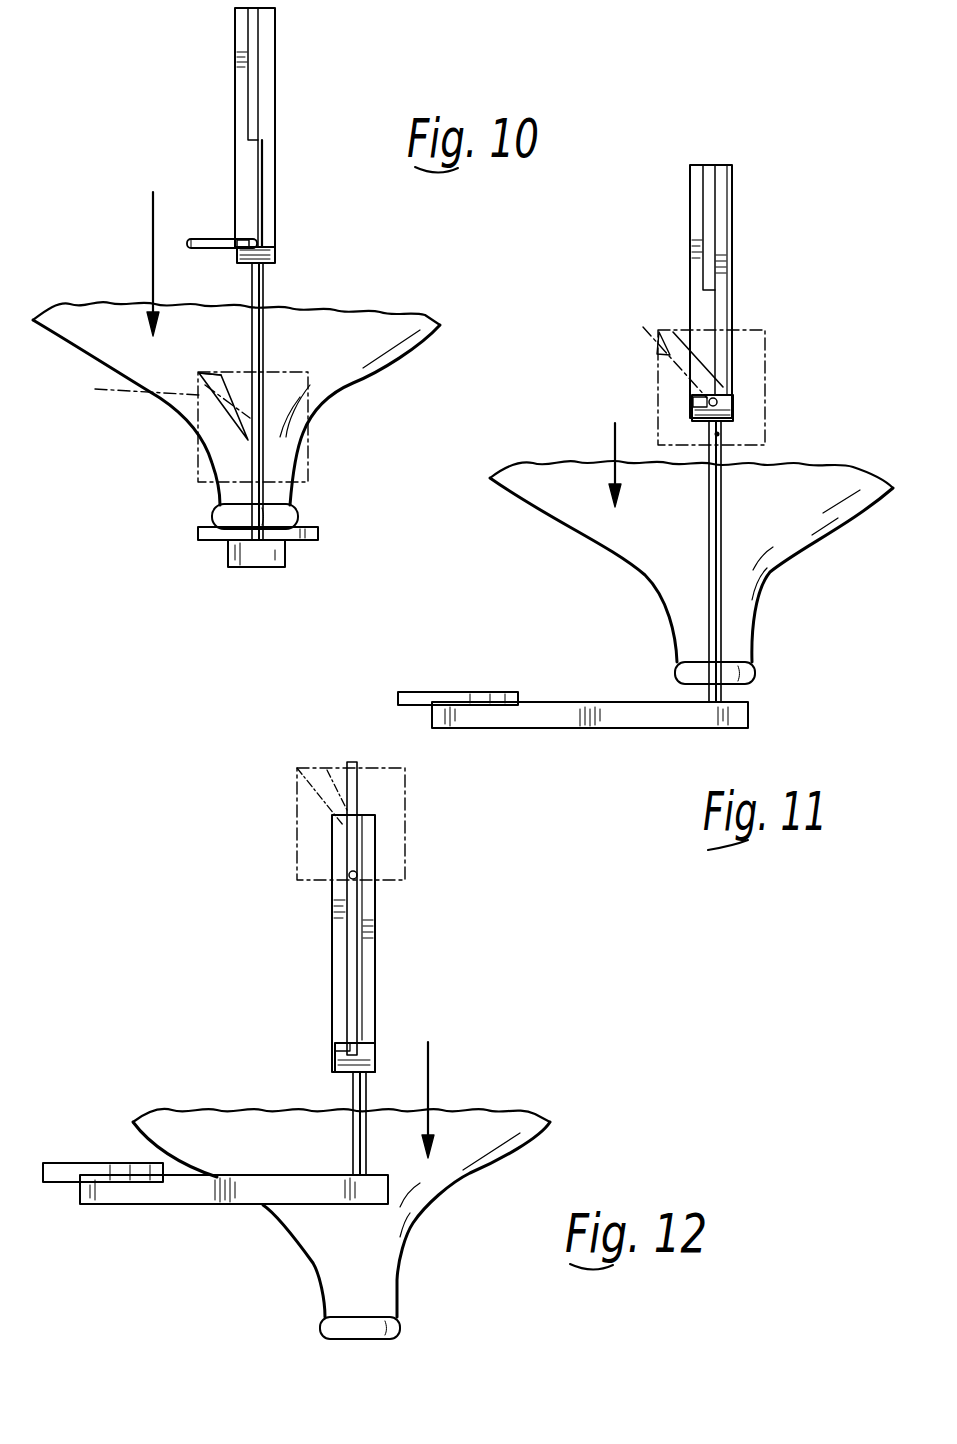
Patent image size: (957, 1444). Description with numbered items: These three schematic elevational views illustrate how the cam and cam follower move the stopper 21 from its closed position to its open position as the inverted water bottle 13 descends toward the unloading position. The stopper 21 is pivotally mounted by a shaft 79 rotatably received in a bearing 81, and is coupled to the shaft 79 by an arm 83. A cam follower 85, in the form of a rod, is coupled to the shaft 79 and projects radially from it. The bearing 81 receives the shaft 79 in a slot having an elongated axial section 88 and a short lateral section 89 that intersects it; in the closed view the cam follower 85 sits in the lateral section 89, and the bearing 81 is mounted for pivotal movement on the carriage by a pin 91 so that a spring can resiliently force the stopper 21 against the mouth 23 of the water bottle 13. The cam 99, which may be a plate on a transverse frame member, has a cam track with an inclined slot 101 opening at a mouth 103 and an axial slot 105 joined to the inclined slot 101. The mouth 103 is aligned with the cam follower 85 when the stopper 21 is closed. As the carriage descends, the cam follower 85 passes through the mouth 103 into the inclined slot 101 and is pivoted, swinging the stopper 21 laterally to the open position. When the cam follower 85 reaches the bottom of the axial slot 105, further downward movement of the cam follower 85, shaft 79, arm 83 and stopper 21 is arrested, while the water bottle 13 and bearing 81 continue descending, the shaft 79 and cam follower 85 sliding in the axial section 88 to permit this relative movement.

In FIG. 10, the water bottle 13 is at (405, 320).
In FIG. 11, the water bottle 13 is at (847, 528).
In FIG. 12, the water bottle 13 is at (540, 1117).
In FIG. 10, the stopper 21 is at (203, 540).
In FIG. 11, the stopper 21 is at (483, 692).
In FIG. 12, the stopper 21 is at (107, 1163).
In FIG. 10, the mouth 23 is at (202, 528).
In FIG. 11, the mouth 23 is at (750, 684).
In FIG. 12, the mouth 23 is at (384, 1339).
In FIG. 10, the shaft 79 is at (263, 290).
In FIG. 11, the shaft 79 is at (715, 561).
In FIG. 12, the shaft 79 is at (353, 1092).
In FIG. 12, the bearing 81 is at (333, 943).
In FIG. 11, the arm 83 is at (597, 728).
In FIG. 12, the arm 83 is at (200, 1197).
In FIG. 10, the cam follower 85 is at (197, 238).
In FIG. 11, the cam follower 85 is at (717, 402).
In FIG. 12, the cam follower 85 is at (362, 875).
In FIG. 10, the elongated axial section 88 is at (257, 77).
In FIG. 11, the elongated axial section 88 is at (712, 230).
In FIG. 10, the short lateral section 89 is at (245, 235).
In FIG. 11, the short lateral section 89 is at (693, 405).
In FIG. 12, the short lateral section 89 is at (337, 1045).
In FIG. 12, the pin 91 is at (300, 863).
In FIG. 10, the cam 99 is at (313, 463).
In FIG. 10, the inclined slot 101 is at (155, 395).
In FIG. 11, the inclined slot 101 is at (643, 327).
In FIG. 10, the mouth 103 is at (201, 372).
In FIG. 11, the mouth 103 is at (673, 332).
In FIG. 10, the axial slot 105 is at (240, 447).
In FIG. 11, the axial slot 105 is at (720, 435).